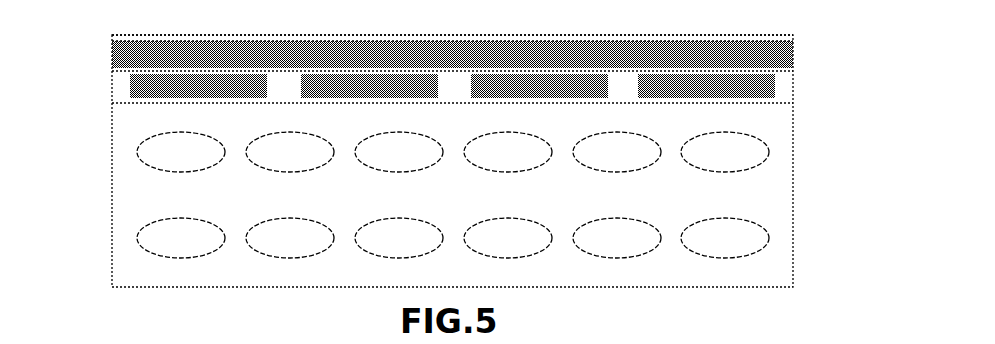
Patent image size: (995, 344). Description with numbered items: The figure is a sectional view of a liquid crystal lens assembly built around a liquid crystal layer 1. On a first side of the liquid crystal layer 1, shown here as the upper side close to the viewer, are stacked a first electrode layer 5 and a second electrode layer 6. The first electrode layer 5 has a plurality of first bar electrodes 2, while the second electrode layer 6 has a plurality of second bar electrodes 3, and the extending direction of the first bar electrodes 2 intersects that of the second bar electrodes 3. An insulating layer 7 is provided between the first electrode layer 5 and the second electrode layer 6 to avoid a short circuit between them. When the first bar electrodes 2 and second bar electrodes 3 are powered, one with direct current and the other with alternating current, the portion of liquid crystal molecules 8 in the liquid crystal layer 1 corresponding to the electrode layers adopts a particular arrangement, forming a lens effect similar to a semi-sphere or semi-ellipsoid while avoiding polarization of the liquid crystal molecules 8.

The liquid crystal layer 1 is at (770, 210).
The first bar electrodes 2 is at (793, 52).
The second bar electrodes 3 is at (793, 101).
The first electrode layer 5 is at (793, 35).
The second electrode layer 6 is at (115, 94).
The insulating layer 7 is at (112, 71).
The liquid crystal molecules 8 is at (150, 240).